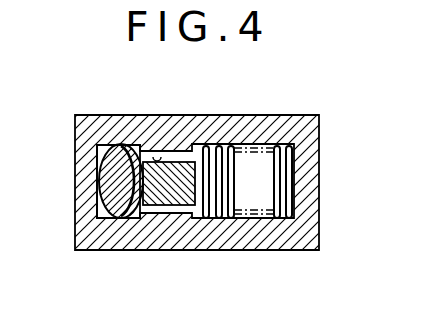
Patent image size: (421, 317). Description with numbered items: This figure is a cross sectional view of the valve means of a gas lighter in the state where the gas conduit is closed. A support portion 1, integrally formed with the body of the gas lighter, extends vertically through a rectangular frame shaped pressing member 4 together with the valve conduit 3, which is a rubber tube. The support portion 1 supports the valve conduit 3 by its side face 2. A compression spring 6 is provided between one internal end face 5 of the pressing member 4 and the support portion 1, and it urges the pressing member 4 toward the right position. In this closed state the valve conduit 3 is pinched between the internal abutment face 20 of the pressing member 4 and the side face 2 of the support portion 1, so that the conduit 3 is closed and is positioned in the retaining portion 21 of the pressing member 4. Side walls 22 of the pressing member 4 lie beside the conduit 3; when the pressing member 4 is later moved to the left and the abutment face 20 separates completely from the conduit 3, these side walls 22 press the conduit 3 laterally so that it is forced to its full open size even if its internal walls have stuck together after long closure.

The support portion 1 is at (178, 161).
The side face 2 is at (140, 215).
The valve conduit 3 is at (122, 195).
The pressing member 4 is at (319, 150).
The internal end face 5 is at (290, 183).
The compression spring 6 is at (270, 162).
The internal abutment face 20 is at (98, 183).
The retaining portion 21 is at (118, 220).
The side walls 22 is at (157, 156).